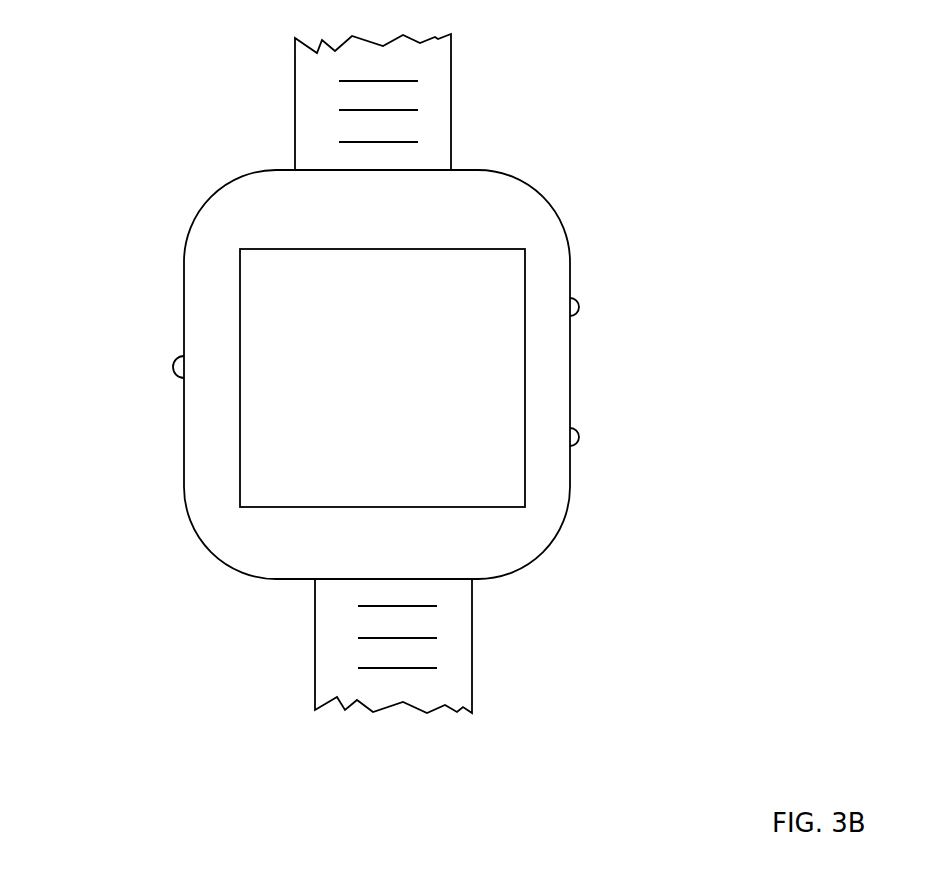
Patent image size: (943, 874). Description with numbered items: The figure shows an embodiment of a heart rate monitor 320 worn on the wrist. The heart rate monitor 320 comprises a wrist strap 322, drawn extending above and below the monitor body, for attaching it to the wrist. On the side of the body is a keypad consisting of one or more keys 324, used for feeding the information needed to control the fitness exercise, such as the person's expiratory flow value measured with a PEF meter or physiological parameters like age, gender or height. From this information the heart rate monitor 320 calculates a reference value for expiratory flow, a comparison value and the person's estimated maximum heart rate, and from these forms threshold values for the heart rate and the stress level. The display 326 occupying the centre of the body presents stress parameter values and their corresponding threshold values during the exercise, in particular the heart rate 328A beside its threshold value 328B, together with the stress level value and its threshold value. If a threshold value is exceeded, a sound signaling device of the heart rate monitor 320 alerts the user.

The heart rate monitor 320 is at (138, 590).
The wrist strap 322 is at (452, 100).
The keys 324 is at (580, 305).
The display 326 is at (362, 507).
The heart rate 328A is at (308, 280).
The threshold value 328B is at (454, 282).